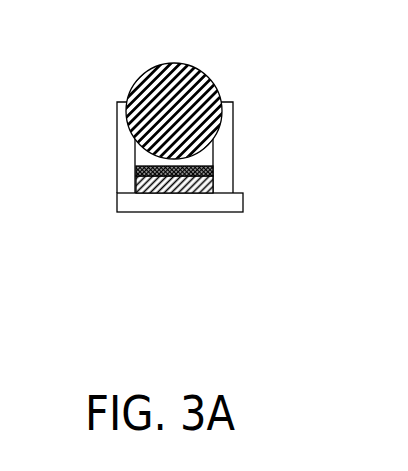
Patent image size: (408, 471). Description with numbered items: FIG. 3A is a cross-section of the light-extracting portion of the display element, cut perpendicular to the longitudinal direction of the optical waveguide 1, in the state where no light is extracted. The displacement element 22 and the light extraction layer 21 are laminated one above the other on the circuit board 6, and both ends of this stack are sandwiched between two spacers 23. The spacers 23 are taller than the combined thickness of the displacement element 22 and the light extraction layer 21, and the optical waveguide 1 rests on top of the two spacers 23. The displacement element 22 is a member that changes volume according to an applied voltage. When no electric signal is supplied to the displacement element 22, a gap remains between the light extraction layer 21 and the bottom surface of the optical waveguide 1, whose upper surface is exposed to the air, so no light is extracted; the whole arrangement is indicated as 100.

The optical waveguide 1 is at (185, 79).
The circuit board 6 is at (227, 200).
The light extraction layer 21 is at (140, 193).
The displacement element 22 is at (172, 182).
The spacers 23 is at (123, 144).
The assembly 100 is at (289, 243).